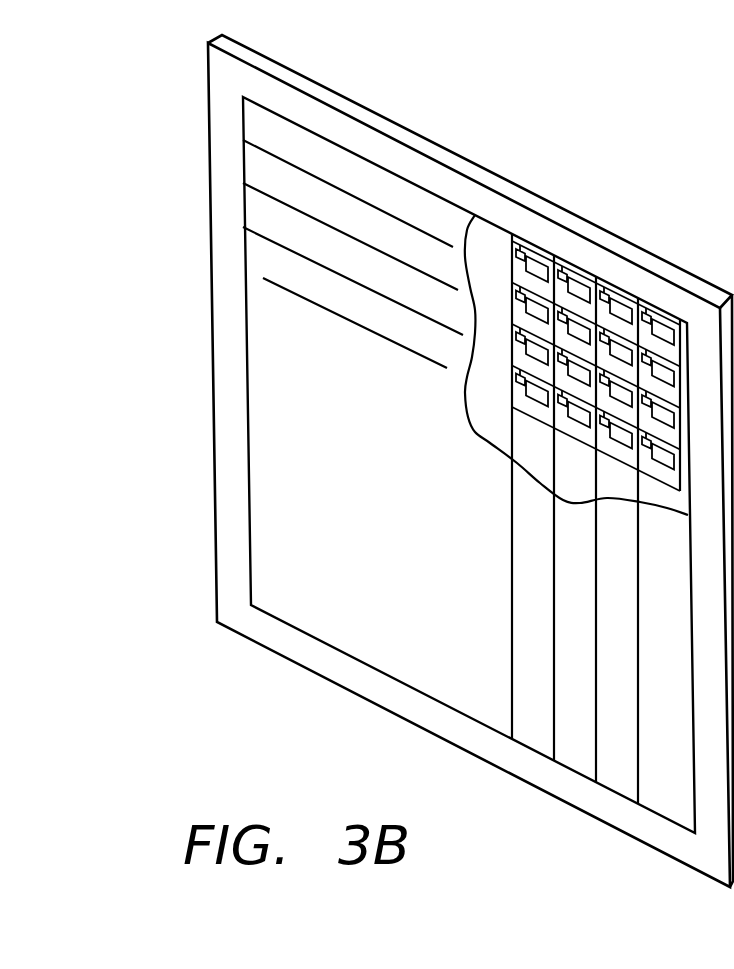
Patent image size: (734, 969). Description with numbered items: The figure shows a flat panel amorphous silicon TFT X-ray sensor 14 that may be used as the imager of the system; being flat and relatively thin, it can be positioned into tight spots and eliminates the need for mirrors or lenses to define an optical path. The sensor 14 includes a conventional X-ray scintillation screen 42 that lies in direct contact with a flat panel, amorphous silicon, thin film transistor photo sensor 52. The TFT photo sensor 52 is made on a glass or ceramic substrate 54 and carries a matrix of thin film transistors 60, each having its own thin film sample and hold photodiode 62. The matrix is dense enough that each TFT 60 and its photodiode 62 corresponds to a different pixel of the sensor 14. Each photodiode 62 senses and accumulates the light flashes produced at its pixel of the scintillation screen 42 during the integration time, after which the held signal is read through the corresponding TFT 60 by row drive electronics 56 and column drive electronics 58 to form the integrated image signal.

The flat panel sensor 14 is at (143, 90).
The X-ray scintillation screen 42 is at (365, 525).
The TFT photo sensor 52 is at (490, 276).
The substrate 54 is at (660, 851).
The row drive electronics 56 is at (340, 317).
The column drive electronics 58 is at (513, 687).
The thin film transistor 60 is at (512, 382).
The sample and hold photodiode 62 is at (580, 424).